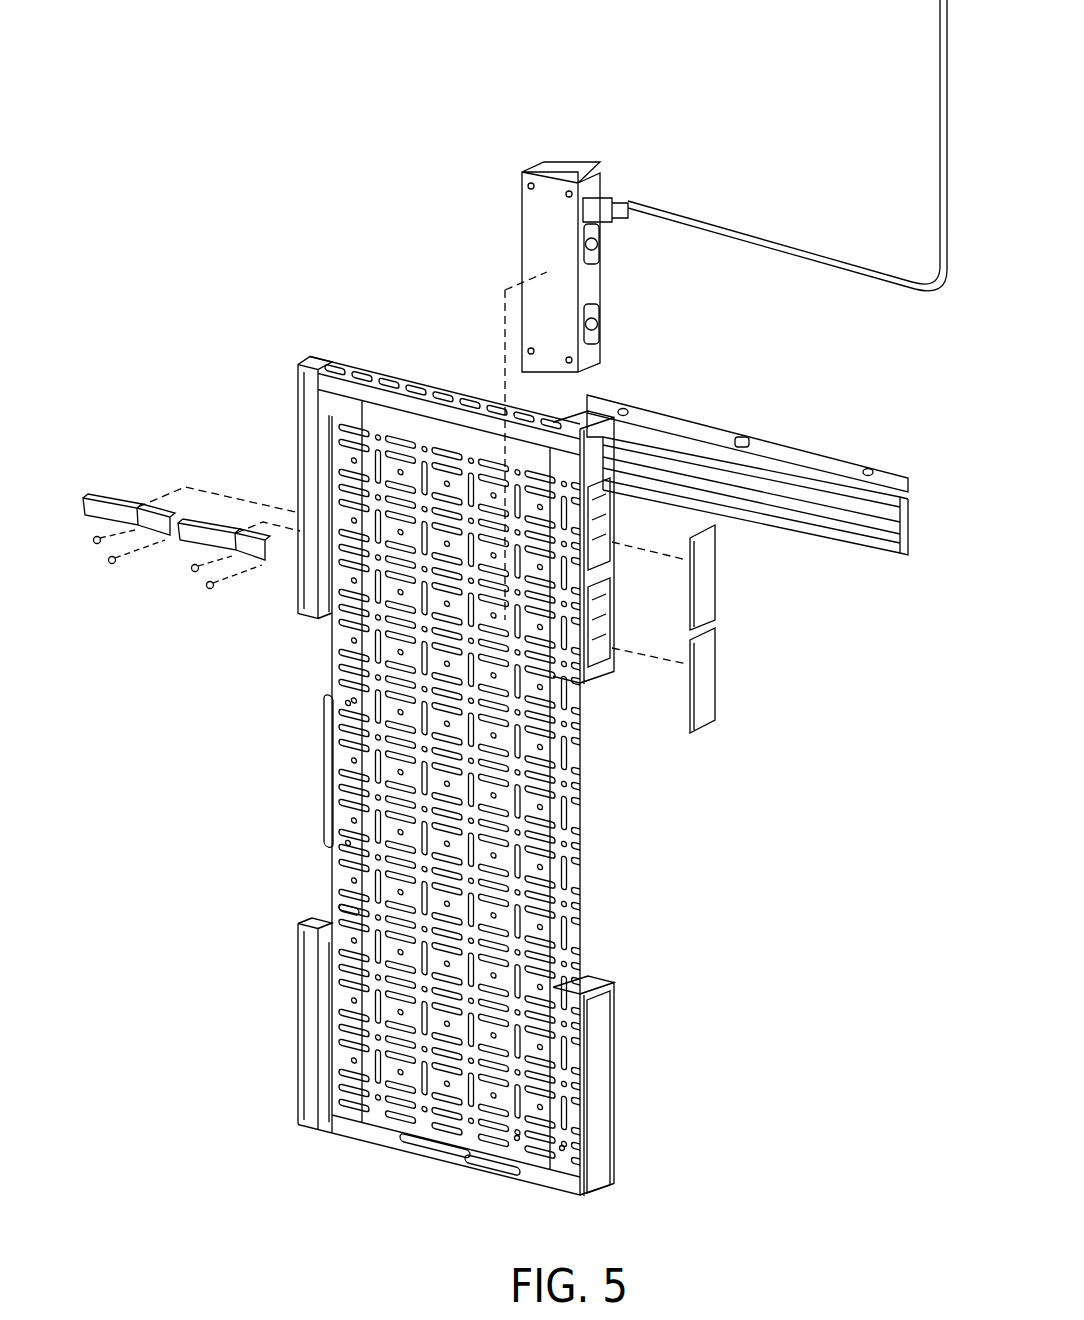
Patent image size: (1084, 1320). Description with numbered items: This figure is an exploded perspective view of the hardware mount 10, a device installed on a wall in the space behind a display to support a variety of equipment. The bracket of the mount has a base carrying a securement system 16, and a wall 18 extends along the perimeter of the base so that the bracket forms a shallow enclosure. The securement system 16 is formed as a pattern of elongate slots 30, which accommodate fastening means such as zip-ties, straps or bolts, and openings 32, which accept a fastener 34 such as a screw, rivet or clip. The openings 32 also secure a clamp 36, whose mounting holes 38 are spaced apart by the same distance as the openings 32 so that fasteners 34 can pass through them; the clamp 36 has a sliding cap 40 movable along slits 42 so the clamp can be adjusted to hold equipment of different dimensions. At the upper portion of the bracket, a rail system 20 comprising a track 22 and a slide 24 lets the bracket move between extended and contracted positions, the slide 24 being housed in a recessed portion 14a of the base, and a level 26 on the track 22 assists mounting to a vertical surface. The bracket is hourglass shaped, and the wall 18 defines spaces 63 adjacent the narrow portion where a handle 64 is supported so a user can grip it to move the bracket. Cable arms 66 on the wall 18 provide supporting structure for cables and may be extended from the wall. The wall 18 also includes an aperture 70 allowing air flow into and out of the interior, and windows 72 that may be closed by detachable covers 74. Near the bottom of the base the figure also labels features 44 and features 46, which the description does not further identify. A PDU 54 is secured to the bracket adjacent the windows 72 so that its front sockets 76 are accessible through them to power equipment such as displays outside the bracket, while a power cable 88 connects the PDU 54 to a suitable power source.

The hardware mount 10 is at (728, 936).
The recessed portion 14a is at (443, 396).
The securement system 16 is at (470, 797).
The wall 18 is at (340, 878).
The rail system 20 is at (622, 385).
The track 22 is at (835, 462).
The slide 24 is at (635, 440).
The level 26 is at (745, 438).
The slots 30 is at (471, 790).
The openings 32 is at (470, 797).
The fastener 34 is at (112, 565).
The clamp 36 is at (208, 515).
The mounting holes 38 is at (162, 540).
The sliding cap 40 is at (100, 490).
The slits 42 is at (152, 505).
The bottom slots 44 is at (402, 1112).
The bottom holes 46 is at (563, 1152).
The PDU 54 is at (726, 310).
The spaces 63 is at (583, 802).
The handle 64 is at (337, 773).
The cable arm 66 is at (315, 488).
The aperture 70 is at (460, 1154).
The windows 72 is at (315, 1024).
The covers 74 is at (706, 642).
The front sockets 76 is at (602, 322).
The power cable 88 is at (940, 50).